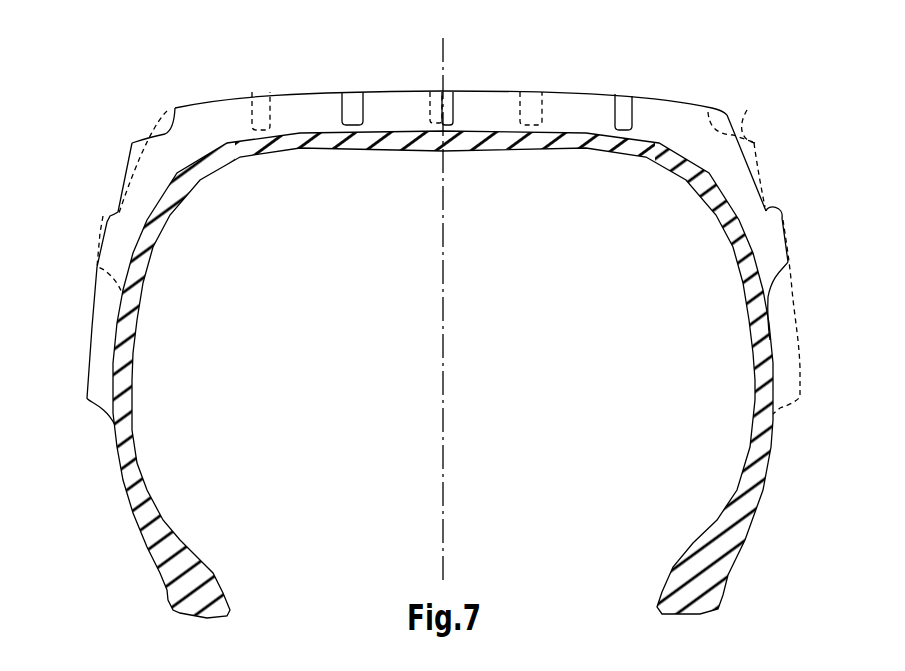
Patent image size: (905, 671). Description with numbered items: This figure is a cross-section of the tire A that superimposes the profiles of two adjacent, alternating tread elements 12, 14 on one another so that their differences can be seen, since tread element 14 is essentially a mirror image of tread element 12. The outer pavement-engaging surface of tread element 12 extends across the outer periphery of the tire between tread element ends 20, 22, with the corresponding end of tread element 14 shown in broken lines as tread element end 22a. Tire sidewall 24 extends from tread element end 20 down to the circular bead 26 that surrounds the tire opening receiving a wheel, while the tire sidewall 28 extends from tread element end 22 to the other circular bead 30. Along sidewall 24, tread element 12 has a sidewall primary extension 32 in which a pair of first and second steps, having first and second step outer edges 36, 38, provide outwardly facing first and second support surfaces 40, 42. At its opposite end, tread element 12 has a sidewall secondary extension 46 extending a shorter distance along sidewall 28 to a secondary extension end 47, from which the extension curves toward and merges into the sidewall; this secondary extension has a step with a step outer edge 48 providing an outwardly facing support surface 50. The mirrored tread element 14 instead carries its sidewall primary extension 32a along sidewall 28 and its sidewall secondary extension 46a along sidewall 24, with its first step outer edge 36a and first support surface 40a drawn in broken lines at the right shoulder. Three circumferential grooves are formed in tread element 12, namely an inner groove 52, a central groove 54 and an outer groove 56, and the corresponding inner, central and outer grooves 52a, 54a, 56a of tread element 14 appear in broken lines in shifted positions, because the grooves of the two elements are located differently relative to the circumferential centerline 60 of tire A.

The tread element 12 is at (674, 98).
The tire A is at (673, 60).
The tread element 14 is at (161, 98).
The tread element end 20 is at (174, 107).
The tread element end 22 is at (724, 112).
The tread element end 22a is at (167, 111).
The tire sidewall 24 is at (114, 453).
The circular bead 26 is at (170, 607).
The tire sidewall 28 is at (770, 477).
The circular bead 30 is at (720, 600).
The sidewall primary extension 32 is at (92, 307).
The sidewall primary extension 32a is at (800, 368).
The first step outer edge 36 is at (131, 143).
The first step outer edge 36a is at (757, 142).
The second step outer edge 38 is at (108, 216).
The first support surface 40 is at (147, 137).
The first support surface 40a is at (747, 110).
The second support surface 42 is at (114, 214).
The sidewall secondary extension 46 is at (790, 243).
The sidewall secondary extension 46a is at (102, 233).
The secondary extension end 47 is at (789, 265).
The step outer edge 48 is at (778, 210).
The support surface 50 is at (768, 204).
The inner groove 52 is at (350, 100).
The inner groove 52a is at (533, 92).
The central groove 54 is at (447, 92).
The central groove 54a is at (437, 90).
The outer groove 56 is at (624, 97).
The outer groove 56a is at (263, 92).
The circumferential centerline 60 is at (445, 54).